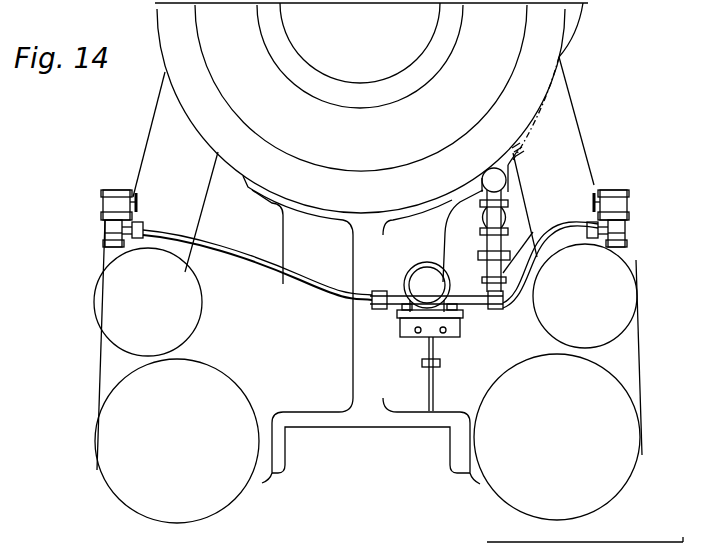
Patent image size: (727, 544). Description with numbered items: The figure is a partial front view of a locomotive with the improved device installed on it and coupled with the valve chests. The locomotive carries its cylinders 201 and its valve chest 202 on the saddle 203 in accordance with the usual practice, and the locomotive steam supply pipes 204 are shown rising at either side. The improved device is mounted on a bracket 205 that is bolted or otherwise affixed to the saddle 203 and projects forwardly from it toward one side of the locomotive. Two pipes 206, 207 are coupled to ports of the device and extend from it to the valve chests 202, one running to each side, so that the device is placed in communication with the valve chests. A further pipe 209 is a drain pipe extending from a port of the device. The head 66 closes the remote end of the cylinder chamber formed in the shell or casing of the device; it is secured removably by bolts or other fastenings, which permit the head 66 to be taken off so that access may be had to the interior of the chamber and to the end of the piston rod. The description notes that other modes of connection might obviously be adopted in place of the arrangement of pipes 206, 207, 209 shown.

The head 66 is at (421, 271).
The cylinders 201 is at (96, 471).
The valve chest 202 is at (100, 305).
The saddle 203 is at (332, 407).
The steam supply pipes 204 is at (160, 116).
The bracket 205 is at (421, 337).
The pipe 206 is at (300, 294).
The pipe 207 is at (516, 305).
The drain pipe 209 is at (434, 390).